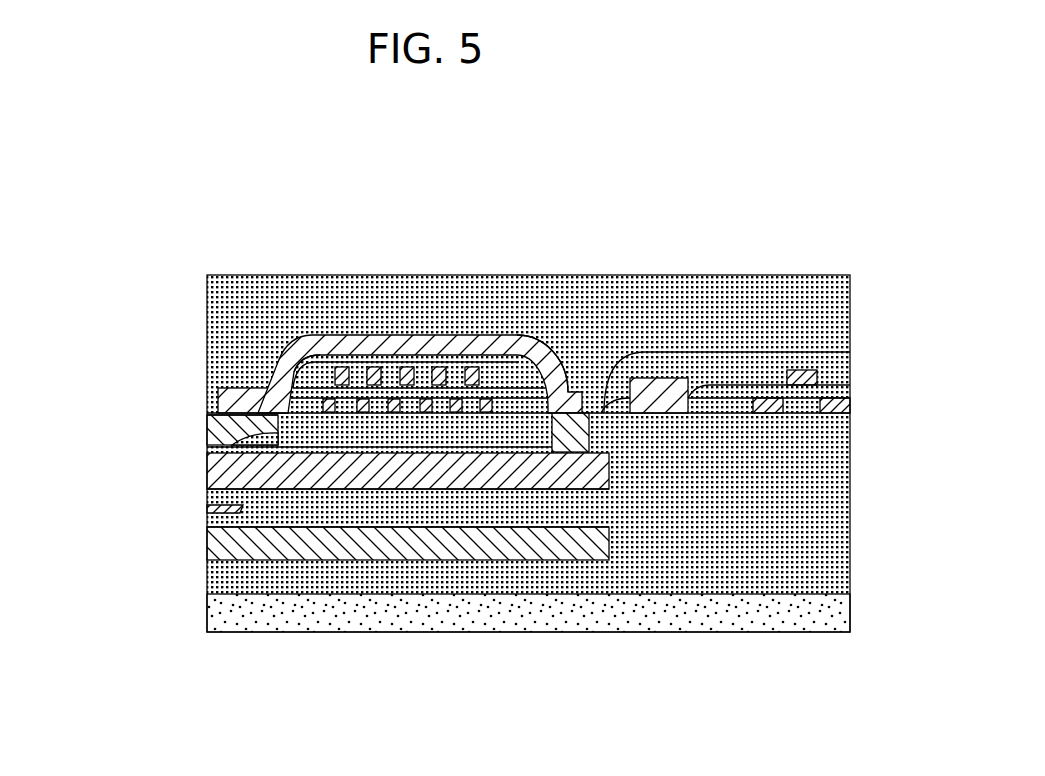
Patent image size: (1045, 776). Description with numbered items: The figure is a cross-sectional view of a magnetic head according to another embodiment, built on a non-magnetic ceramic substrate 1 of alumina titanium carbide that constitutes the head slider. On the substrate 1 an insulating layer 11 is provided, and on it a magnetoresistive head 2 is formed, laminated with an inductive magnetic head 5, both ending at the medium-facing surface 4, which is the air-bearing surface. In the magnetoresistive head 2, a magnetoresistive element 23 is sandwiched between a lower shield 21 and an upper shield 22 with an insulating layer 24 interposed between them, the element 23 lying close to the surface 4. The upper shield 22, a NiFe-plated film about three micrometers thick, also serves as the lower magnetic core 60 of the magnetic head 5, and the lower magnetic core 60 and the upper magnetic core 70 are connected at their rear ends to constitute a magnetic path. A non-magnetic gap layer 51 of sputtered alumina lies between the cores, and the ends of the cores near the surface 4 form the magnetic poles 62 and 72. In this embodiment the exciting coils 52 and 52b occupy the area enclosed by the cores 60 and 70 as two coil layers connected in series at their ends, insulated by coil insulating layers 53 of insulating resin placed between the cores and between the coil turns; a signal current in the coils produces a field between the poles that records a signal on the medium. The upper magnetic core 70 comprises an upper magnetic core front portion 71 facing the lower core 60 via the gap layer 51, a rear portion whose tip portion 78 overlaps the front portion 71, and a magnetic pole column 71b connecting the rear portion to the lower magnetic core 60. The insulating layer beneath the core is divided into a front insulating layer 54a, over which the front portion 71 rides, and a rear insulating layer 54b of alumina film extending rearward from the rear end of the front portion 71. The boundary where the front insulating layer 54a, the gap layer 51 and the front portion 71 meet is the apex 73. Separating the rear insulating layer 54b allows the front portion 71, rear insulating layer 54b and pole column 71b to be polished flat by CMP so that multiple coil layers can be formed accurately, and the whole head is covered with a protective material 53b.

The non-magnetic ceramic substrate 1 is at (230, 615).
The magnetoresistive head 2 is at (80, 478).
The medium-facing surface 4 is at (207, 603).
The inductive magnetic head 5 is at (118, 423).
The insulating layer 11 is at (283, 580).
The lower shield 21 is at (593, 548).
The upper shield 22 is at (327, 480).
The magnetoresistive element 23 is at (207, 512).
The insulating layer 24 is at (538, 513).
The non-magnetic gap layer 51 is at (448, 450).
The exciting coil 52 is at (463, 400).
The exciting coil 52b is at (342, 390).
The coil insulating layer 53 is at (405, 395).
The protective material 53b is at (722, 292).
The front insulating layer 54a is at (222, 405).
The rear insulating layer 54b is at (520, 430).
The lower magnetic core 60 is at (408, 643).
The magnetic pole 62 is at (207, 485).
The upper magnetic core 70 is at (395, 213).
The upper magnetic core front portion 71 is at (253, 420).
The magnetic pole column 71b is at (515, 333).
The magnetic pole 72 is at (207, 435).
The apex 73 is at (212, 420).
The tip portion 78 is at (243, 392).